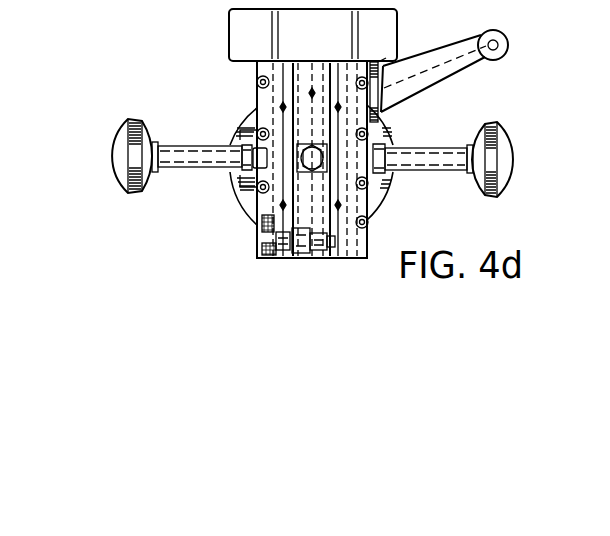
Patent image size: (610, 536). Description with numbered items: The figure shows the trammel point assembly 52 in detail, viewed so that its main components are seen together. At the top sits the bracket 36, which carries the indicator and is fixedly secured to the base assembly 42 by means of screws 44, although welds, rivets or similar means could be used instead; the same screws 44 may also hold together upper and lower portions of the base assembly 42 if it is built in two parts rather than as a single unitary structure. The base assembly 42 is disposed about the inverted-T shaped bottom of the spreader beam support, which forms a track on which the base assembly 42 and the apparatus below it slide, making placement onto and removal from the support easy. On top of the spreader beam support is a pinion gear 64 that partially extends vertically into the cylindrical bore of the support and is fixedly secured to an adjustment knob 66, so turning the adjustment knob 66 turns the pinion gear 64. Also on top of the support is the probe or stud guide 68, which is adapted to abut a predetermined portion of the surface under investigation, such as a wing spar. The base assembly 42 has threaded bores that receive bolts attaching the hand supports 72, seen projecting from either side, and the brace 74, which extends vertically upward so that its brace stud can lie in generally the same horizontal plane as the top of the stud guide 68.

The bracket 36 is at (319, 35).
The base assembly 42 is at (250, 212).
The screws 44 is at (238, 179).
The trammel point assembly 52 is at (189, 47).
The pinion gear 64 is at (310, 258).
The adjustment knob 66 is at (262, 253).
The stud guide 68 is at (305, 152).
The hand supports 72 is at (120, 157).
The brace 74 is at (509, 53).